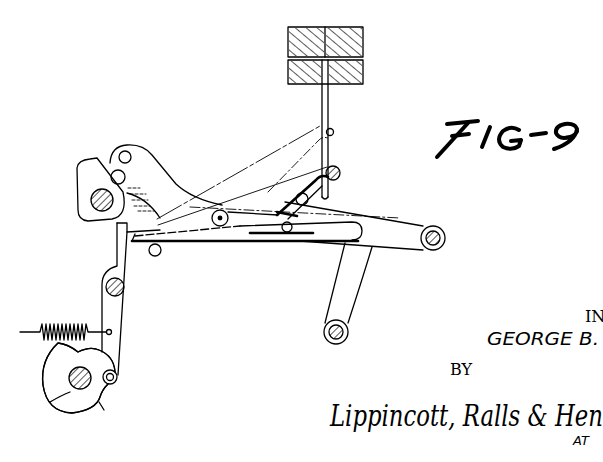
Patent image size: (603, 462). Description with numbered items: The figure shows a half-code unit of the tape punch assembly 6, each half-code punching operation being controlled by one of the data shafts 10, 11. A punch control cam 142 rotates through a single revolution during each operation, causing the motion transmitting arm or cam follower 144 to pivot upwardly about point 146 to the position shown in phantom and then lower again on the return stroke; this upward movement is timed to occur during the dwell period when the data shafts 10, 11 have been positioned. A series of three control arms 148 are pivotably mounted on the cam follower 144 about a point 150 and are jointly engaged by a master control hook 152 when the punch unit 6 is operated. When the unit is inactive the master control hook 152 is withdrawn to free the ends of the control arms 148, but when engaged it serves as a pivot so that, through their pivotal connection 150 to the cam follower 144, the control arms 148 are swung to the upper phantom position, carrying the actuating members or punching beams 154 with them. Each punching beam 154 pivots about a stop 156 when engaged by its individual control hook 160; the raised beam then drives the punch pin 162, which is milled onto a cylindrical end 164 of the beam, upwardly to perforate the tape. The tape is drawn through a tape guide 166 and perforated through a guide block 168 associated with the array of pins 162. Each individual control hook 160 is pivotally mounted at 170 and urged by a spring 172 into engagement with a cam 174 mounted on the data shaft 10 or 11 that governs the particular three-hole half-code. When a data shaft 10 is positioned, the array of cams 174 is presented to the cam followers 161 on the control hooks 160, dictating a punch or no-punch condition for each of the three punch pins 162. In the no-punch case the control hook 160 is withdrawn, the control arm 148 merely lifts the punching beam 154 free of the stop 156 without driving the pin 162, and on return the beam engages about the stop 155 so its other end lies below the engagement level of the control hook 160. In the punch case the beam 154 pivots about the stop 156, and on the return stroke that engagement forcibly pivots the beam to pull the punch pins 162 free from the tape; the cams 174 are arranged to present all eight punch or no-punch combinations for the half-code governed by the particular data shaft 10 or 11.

The tape punch assembly 6 is at (225, 133).
The data shaft 10 is at (75, 396).
The data shaft 11 is at (75, 396).
The punch control cam 142 is at (78, 168).
The motion transmitting arm or cam follower 144 is at (149, 186).
The pivot point 146 is at (444, 238).
The control arms 148 is at (310, 240).
The pivot point 150 is at (283, 238).
The master control hook 152 is at (333, 294).
The punching beam 154 is at (198, 240).
The stop 155 is at (320, 208).
The stop 156 is at (157, 255).
The individual control hook 160 is at (101, 303).
The cam follower 161 is at (118, 378).
The punch pin 162 is at (322, 100).
The cylindrical end 164 is at (341, 177).
The tape guide 166 is at (361, 78).
The guide block 168 is at (362, 44).
The pivot mounting 170 is at (125, 291).
The spring 172 is at (42, 342).
The cam 174 is at (103, 406).